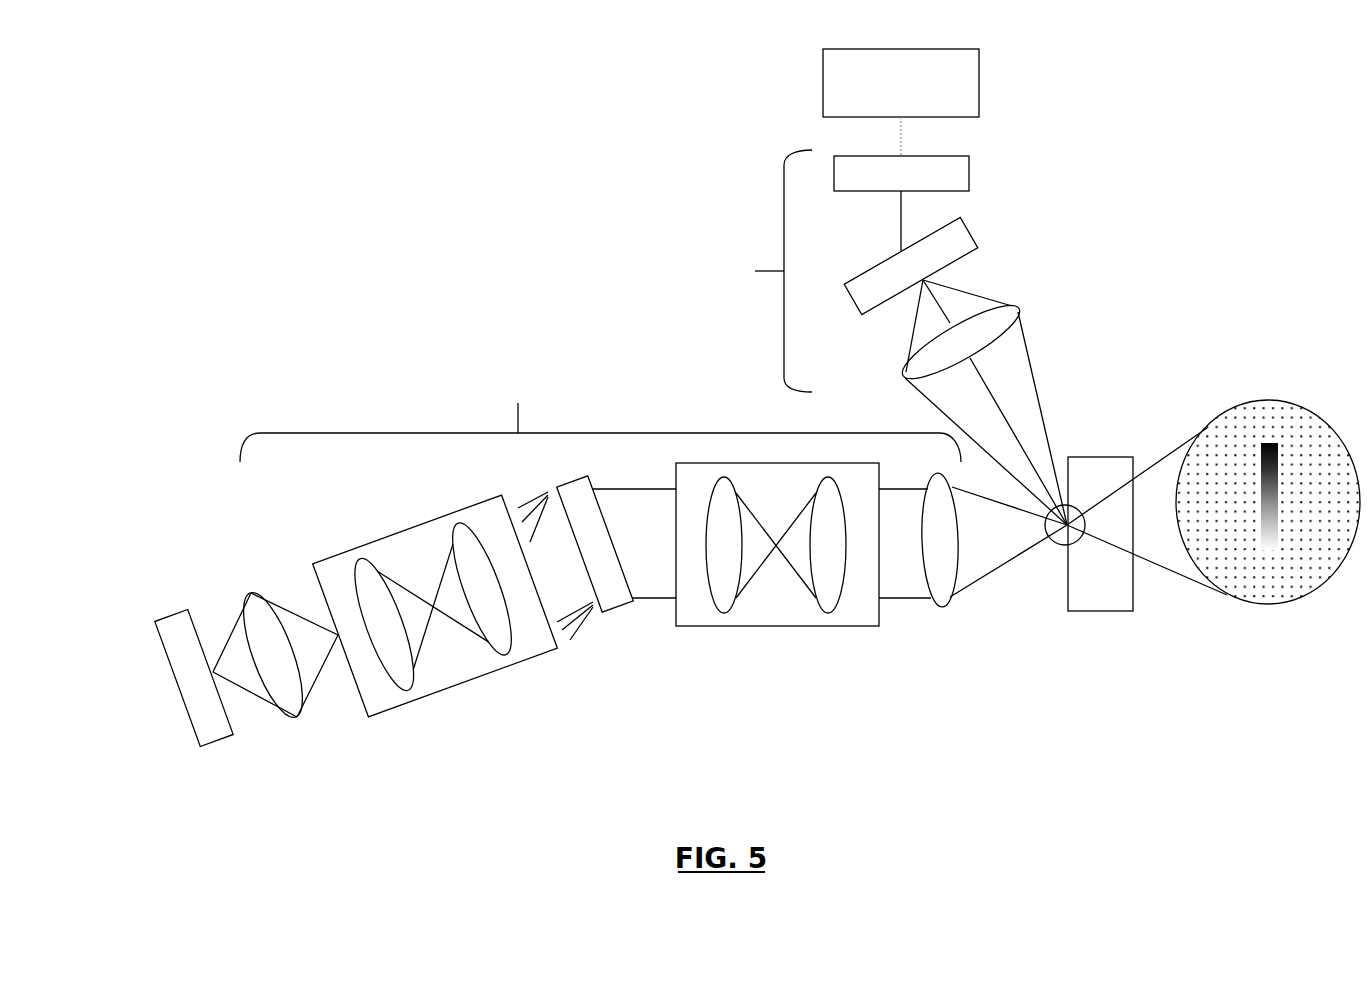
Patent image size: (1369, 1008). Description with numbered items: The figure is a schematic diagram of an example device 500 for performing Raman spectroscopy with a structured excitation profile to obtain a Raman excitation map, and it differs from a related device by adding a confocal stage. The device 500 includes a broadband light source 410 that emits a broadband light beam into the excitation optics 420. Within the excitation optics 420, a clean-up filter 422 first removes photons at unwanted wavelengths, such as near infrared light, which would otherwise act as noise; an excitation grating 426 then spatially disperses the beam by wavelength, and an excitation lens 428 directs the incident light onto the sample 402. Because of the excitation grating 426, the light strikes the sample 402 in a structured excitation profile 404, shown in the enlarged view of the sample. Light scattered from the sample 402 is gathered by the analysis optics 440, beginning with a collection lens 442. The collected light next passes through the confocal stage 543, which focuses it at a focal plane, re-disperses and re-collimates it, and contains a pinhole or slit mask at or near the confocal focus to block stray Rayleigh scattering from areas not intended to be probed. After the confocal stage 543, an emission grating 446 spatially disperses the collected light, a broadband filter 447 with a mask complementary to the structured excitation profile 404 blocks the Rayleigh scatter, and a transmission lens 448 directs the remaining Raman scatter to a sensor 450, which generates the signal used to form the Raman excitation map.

The device 500 is at (272, 172).
The broadband light source 410 is at (823, 83).
The excitation optics 420 is at (643, 318).
The clean-up filter 422 is at (969, 176).
The excitation grating 426 is at (970, 236).
The excitation lens 428 is at (1018, 308).
The sample 402 is at (1241, 508).
The structured excitation profile 404 is at (1300, 462).
The analysis optics 440 is at (497, 385).
The collection lens 442 is at (940, 607).
The confocal stage 543 is at (782, 626).
The emission grating 446 is at (612, 613).
The filter 447 is at (475, 683).
The transmission lens 448 is at (293, 718).
The sensor 450 is at (158, 637).